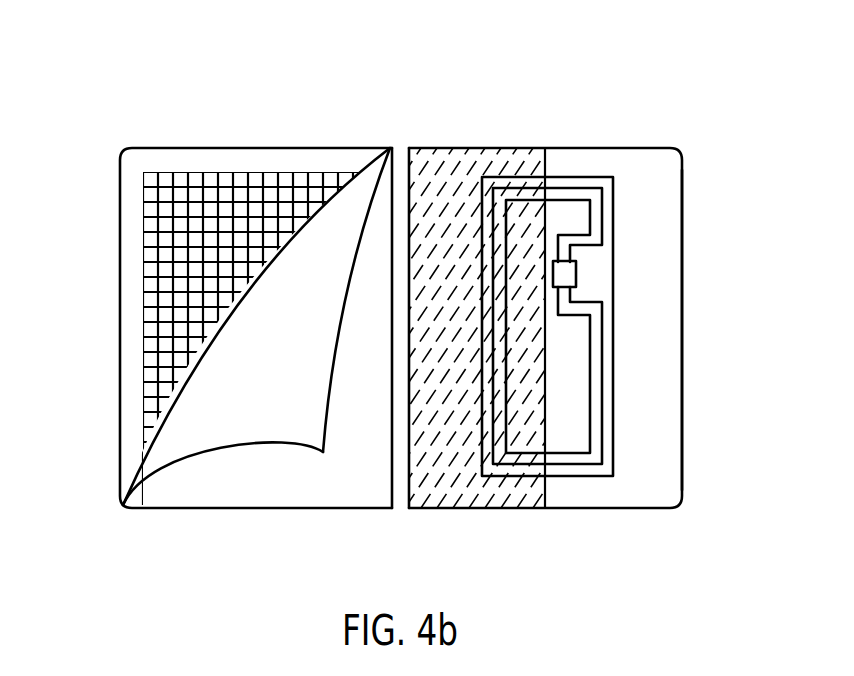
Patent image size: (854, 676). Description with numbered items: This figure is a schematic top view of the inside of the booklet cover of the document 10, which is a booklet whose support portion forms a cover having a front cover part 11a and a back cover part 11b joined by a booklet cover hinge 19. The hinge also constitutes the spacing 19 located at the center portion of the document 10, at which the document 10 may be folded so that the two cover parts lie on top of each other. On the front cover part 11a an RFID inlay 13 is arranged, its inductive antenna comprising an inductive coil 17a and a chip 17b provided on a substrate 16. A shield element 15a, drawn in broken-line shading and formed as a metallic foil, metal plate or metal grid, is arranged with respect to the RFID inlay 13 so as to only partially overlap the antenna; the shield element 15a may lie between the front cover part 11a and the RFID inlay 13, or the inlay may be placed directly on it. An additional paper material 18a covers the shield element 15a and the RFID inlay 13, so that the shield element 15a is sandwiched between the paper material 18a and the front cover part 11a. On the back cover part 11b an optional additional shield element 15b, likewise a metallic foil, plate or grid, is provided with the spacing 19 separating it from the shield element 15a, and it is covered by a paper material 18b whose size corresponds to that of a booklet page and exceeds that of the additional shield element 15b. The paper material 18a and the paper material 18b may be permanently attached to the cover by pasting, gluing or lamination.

The document 10 is at (146, 99).
The front cover part 11a is at (648, 148).
The back cover part 11b is at (120, 252).
The RFID inlay 13 is at (616, 326).
The shield element 15a is at (527, 430).
The additional shield element 15b is at (150, 207).
The substrate 16 is at (613, 233).
The inductive coil 17a is at (613, 358).
The chip 17b is at (572, 275).
The paper material 18a is at (682, 448).
The paper material 18b is at (239, 432).
The spacing / booklet cover hinge 19 is at (400, 153).